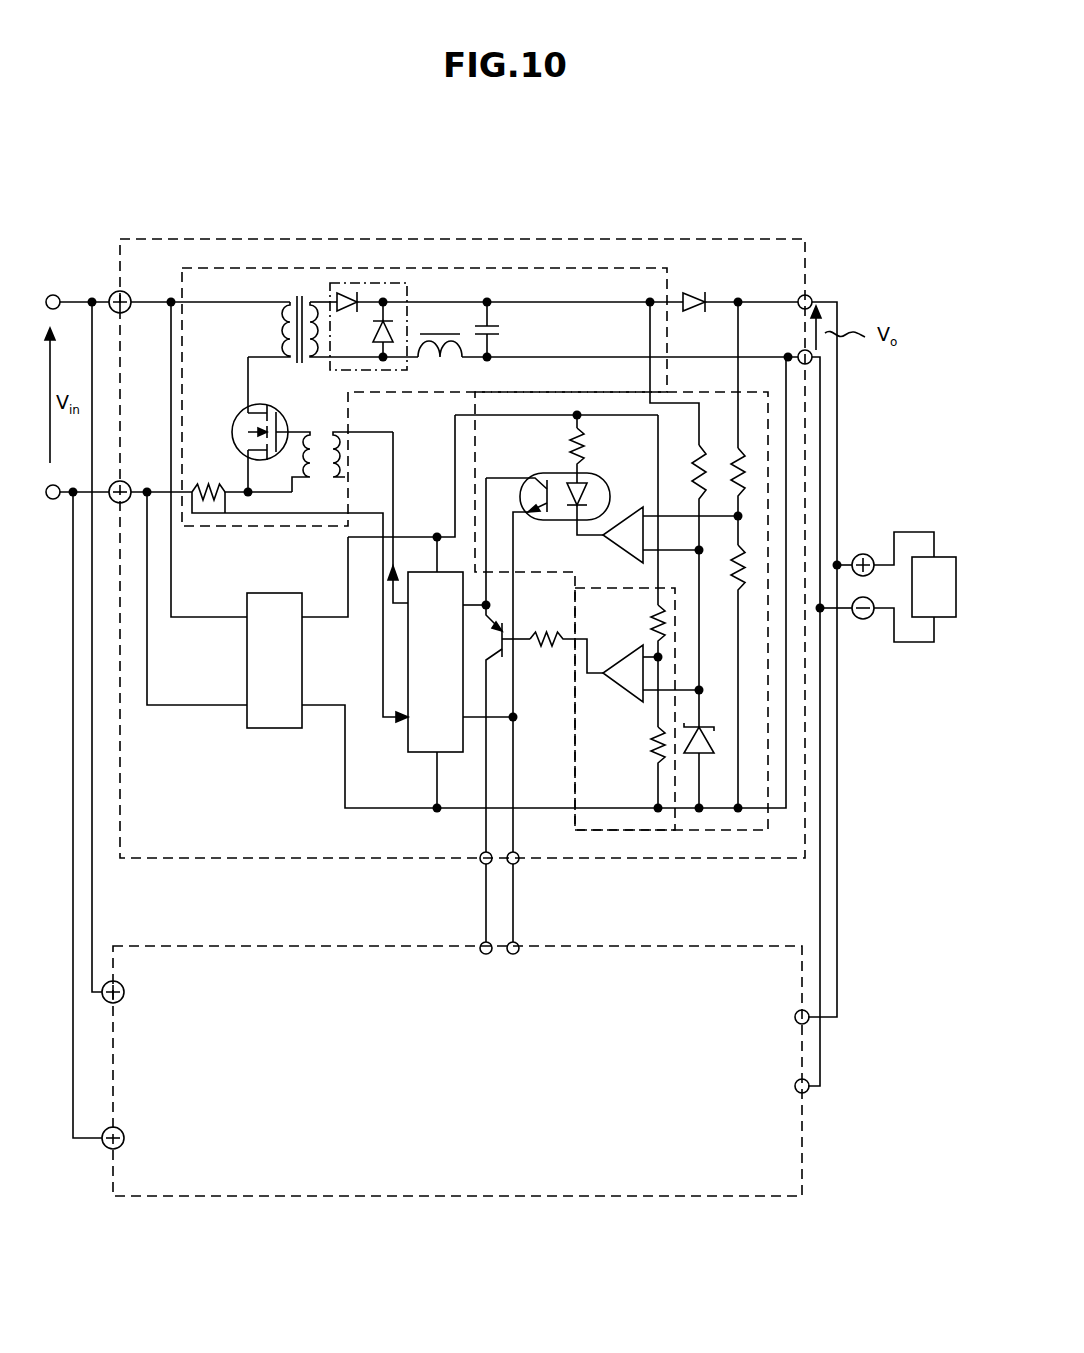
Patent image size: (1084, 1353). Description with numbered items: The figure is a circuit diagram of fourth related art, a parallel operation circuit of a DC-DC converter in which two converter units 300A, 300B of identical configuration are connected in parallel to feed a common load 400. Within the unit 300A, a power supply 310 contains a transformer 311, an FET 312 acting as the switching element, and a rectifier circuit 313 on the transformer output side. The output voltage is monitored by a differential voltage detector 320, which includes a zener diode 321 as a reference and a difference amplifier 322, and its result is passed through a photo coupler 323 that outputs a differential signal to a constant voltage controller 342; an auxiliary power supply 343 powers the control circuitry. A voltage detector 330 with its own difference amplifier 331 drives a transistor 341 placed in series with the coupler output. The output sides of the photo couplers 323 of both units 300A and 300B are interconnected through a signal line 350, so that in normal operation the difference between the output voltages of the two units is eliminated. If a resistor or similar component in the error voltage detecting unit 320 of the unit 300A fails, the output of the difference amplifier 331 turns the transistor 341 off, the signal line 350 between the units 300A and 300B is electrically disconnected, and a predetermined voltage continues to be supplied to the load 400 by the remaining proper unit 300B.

The converter unit 300A is at (720, 237).
The converter unit 300B is at (706, 1197).
The power supply 310 is at (538, 283).
The transformer 311 is at (298, 292).
The FET 312 is at (273, 406).
The rectifier circuit 313 is at (358, 283).
The differential voltage detector 320 is at (757, 776).
The zener diode 321 is at (708, 764).
The difference amplifier 322 is at (630, 508).
The photo coupler 323 is at (547, 472).
The voltage detector 330 is at (617, 788).
The difference amplifier 331 is at (622, 680).
The transistor 341 is at (499, 660).
The constant voltage controller 342 is at (410, 742).
The auxiliary power supply 343 is at (275, 720).
The signal line 350 is at (477, 904).
The load 400 is at (947, 606).